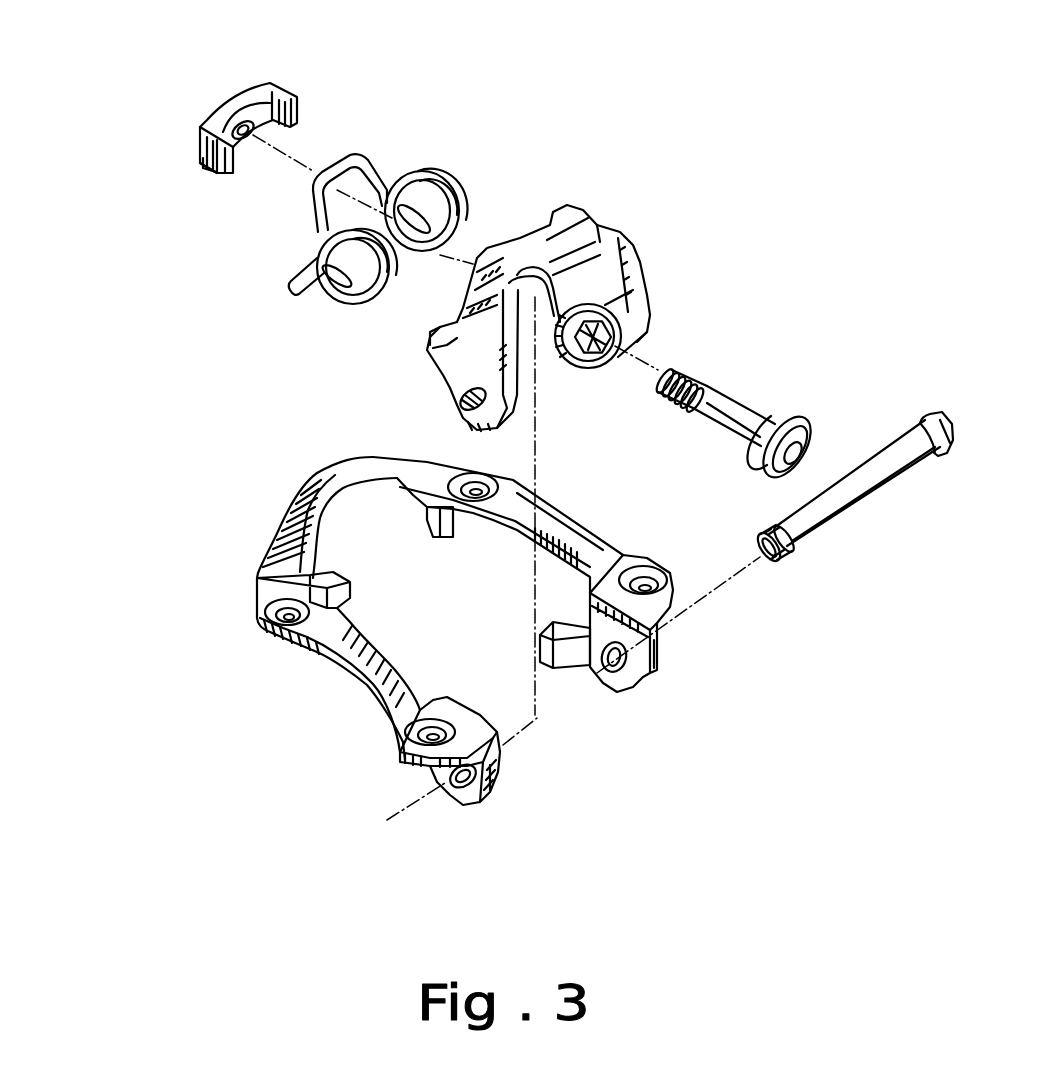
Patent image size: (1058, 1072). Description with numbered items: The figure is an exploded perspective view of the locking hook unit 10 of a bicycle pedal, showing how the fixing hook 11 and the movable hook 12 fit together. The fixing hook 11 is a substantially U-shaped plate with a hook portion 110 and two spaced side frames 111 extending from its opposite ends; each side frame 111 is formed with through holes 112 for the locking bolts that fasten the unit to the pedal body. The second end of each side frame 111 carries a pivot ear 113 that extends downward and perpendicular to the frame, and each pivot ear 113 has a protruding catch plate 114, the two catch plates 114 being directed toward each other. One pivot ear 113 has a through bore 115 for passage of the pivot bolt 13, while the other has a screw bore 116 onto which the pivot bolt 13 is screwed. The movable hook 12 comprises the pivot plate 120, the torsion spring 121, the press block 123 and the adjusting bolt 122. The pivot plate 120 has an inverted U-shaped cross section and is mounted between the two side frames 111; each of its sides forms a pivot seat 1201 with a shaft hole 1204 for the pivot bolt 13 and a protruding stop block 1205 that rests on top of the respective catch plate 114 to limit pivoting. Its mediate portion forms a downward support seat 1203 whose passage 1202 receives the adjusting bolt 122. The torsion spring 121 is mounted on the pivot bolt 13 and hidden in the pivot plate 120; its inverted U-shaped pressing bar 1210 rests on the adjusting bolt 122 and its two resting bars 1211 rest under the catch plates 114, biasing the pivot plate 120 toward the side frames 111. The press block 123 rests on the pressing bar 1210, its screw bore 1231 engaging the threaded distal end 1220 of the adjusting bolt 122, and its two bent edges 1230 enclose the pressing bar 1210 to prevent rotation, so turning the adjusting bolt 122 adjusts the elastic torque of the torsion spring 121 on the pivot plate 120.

The locking hook unit 10 is at (163, 375).
The fixing hook 11 is at (297, 663).
The hook portion 110 is at (330, 458).
The side frames 111 is at (553, 524).
The through holes 112 is at (257, 583).
The pivot ear 113 is at (640, 683).
The catch plate 114 is at (540, 638).
The through bore 115 is at (617, 673).
The screw bore 116 is at (453, 797).
The movable hook 12 is at (370, 2).
The pivot plate 120 is at (560, 203).
The pivot seat 1201 is at (447, 382).
The passage 1202 is at (596, 356).
The support seat 1203 is at (620, 298).
The shaft hole 1204 is at (480, 427).
The stop block 1205 is at (427, 343).
The torsion spring 121 is at (403, 180).
The pressing bar 1210 is at (312, 205).
The resting bar 1211 is at (293, 273).
The adjusting bolt 122 is at (743, 413).
The threaded distal end 1220 is at (690, 373).
The press block 123 is at (217, 112).
The bent edge 1230 is at (228, 172).
The screw bore 1231 is at (248, 132).
The pivot bolt 13 is at (866, 496).